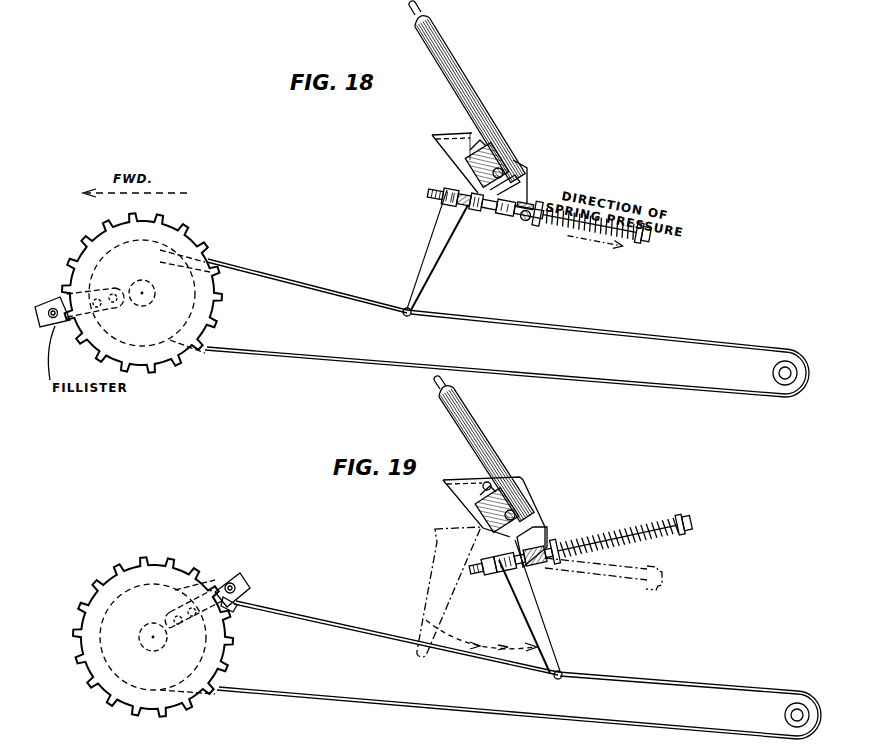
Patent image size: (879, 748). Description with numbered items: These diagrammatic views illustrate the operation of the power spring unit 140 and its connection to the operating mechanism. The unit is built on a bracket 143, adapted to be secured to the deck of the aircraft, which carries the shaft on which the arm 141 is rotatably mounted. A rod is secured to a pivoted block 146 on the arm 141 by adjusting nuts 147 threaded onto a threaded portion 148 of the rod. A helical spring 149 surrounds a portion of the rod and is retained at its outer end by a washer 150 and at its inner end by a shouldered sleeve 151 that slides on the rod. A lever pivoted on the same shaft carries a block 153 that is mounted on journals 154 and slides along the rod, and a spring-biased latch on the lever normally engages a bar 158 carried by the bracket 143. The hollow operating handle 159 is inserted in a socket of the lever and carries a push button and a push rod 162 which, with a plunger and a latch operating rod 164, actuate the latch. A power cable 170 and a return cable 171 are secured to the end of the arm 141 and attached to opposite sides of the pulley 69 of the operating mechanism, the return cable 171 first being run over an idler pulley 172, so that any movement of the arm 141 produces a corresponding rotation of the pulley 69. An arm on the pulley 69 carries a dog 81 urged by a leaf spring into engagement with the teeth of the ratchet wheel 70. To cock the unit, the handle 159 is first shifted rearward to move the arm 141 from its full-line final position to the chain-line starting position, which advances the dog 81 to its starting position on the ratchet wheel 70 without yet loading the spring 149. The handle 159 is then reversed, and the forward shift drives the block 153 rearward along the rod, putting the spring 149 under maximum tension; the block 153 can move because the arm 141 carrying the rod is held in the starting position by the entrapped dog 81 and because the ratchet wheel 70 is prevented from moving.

In FIG. 18, the pulley 69 is at (190, 308).
In FIG. 18, the ratchet wheel 70 is at (196, 243).
In FIG. 19, the ratchet wheel 70 is at (155, 562).
In FIG. 18, the dog 81 is at (60, 292).
In FIG. 19, the dog 81 is at (244, 600).
In FIG. 18, the power spring unit 140 is at (404, 157).
In FIG. 19, the power spring unit 140 is at (432, 527).
In FIG. 18, the arm 141 is at (430, 259).
In FIG. 19, the arm 141 is at (532, 617).
In FIG. 18, the bracket 143 is at (452, 137).
In FIG. 18, the pivoted block 146 is at (437, 210).
In FIG. 18, the adjusting nuts 147 is at (485, 226).
In FIG. 19, the adjusting nuts 147 is at (501, 582).
In FIG. 18, the threaded portion 148 is at (452, 204).
In FIG. 18, the helical spring 149 is at (586, 243).
In FIG. 18, the washer 150 is at (661, 252).
In FIG. 19, the shouldered sleeve 151 is at (621, 533).
In FIG. 18, the block 153 is at (540, 231).
In FIG. 18, the journals 154 is at (507, 220).
In FIG. 19, the journals 154 is at (559, 572).
In FIG. 19, the bar 158 is at (485, 482).
In FIG. 18, the operating handle 159 is at (491, 86).
In FIG. 19, the operating handle 159 is at (484, 449).
In FIG. 18, the push rod 162 is at (416, 19).
In FIG. 19, the latch operating rod 164 is at (533, 520).
In FIG. 18, the power cable 170 is at (345, 283).
In FIG. 19, the power cable 170 is at (350, 630).
In FIG. 18, the return cable 171 is at (595, 328).
In FIG. 19, the return cable 171 is at (688, 684).
In FIG. 18, the idler pulley 172 is at (797, 390).
In FIG. 19, the idler pulley 172 is at (797, 706).